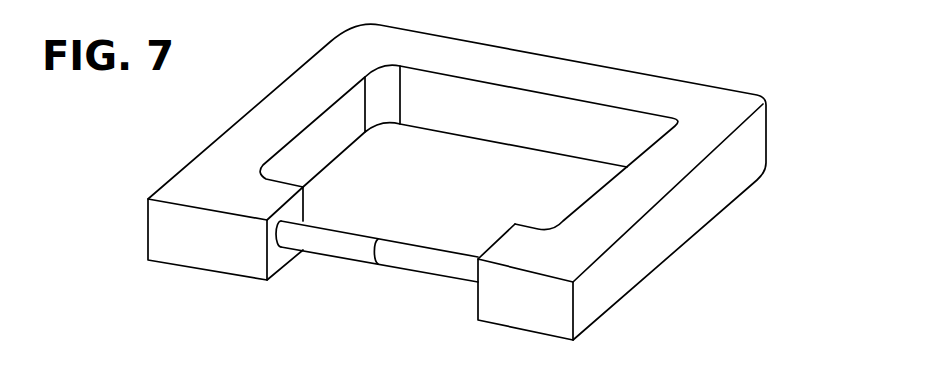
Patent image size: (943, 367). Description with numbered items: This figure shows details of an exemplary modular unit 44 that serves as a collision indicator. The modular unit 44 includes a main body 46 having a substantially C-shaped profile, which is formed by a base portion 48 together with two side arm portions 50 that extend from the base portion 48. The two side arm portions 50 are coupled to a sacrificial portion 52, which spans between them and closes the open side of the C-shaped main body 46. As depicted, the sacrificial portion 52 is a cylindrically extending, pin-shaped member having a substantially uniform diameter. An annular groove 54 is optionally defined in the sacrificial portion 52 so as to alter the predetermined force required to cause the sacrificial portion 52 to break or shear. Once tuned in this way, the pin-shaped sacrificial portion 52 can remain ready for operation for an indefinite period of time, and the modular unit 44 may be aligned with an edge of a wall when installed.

The modular unit 44 is at (781, 55).
The main body 46 is at (774, 142).
The base portion 48 is at (512, 67).
The side arm portions 50 is at (263, 125).
The sacrificial portion 52 is at (428, 258).
The annular groove 54 is at (381, 265).